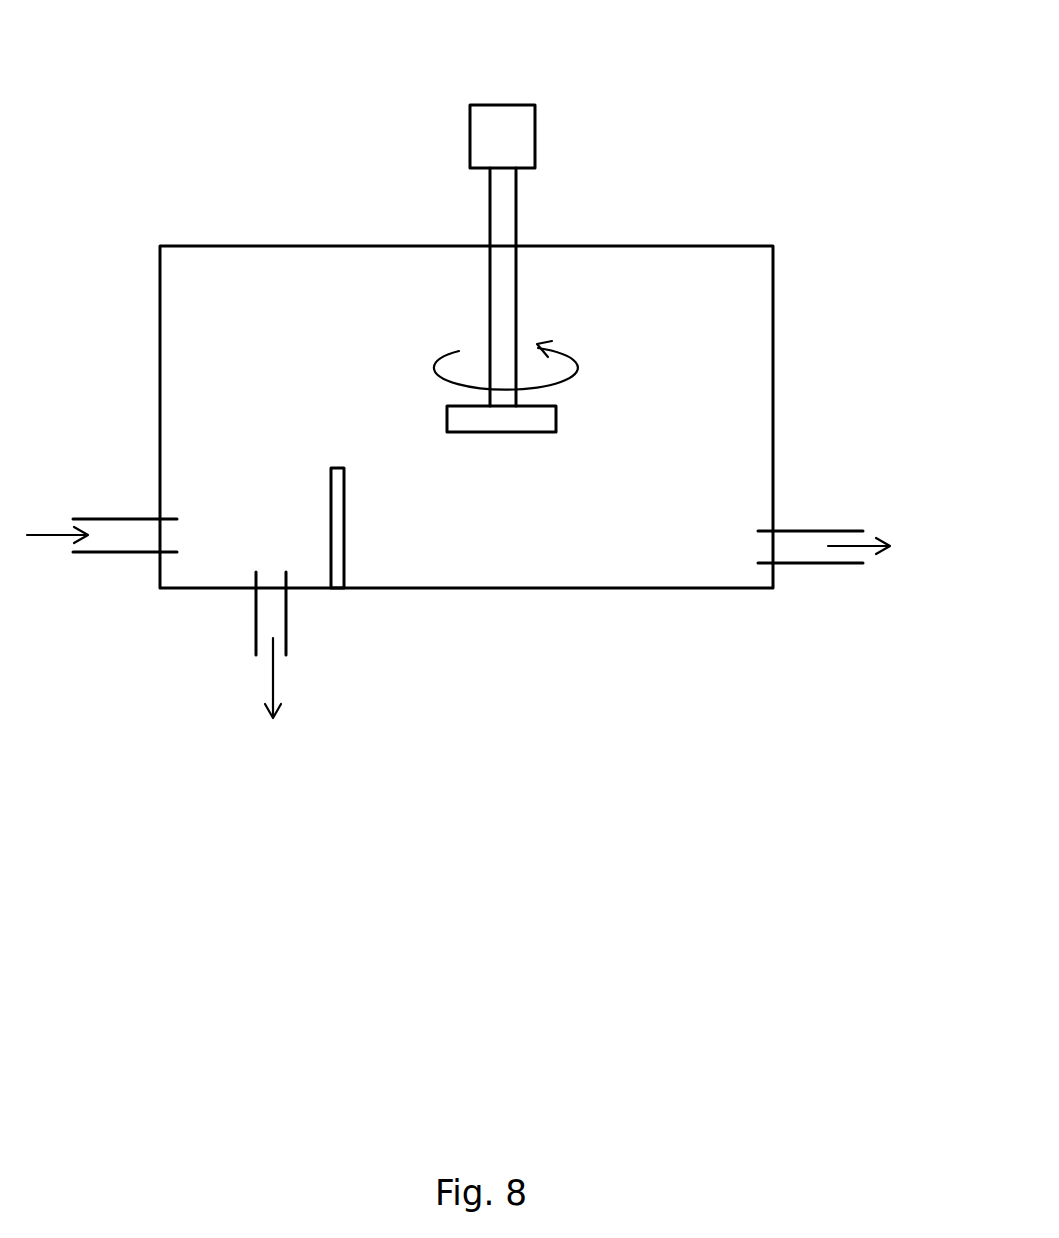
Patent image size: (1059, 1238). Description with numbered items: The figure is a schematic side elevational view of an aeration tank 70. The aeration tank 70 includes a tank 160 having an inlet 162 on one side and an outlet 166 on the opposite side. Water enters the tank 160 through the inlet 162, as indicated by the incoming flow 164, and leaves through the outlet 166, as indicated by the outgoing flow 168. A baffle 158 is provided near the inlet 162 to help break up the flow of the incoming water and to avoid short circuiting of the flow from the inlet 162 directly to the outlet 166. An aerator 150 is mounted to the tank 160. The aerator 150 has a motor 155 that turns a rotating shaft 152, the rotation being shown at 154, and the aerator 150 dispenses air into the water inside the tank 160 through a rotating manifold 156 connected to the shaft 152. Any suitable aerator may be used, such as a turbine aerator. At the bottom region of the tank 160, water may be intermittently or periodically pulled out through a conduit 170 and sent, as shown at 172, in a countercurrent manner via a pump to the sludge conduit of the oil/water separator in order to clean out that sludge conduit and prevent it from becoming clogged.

The aeration tank 70 is at (652, 66).
The aerator 150 is at (522, 285).
The rotating shaft 152 is at (490, 290).
The rotation of the shaft 154 is at (580, 366).
The motor 155 is at (535, 137).
The rotating manifold 156 is at (525, 432).
The baffle 158 is at (348, 530).
The tank 160 is at (160, 344).
The inlet 162 is at (135, 552).
The incoming flow 164 is at (50, 540).
The outlet 166 is at (800, 568).
The outgoing flow 168 is at (870, 556).
The conduit 170 is at (292, 633).
The flow to sludge conduit 172 is at (270, 685).